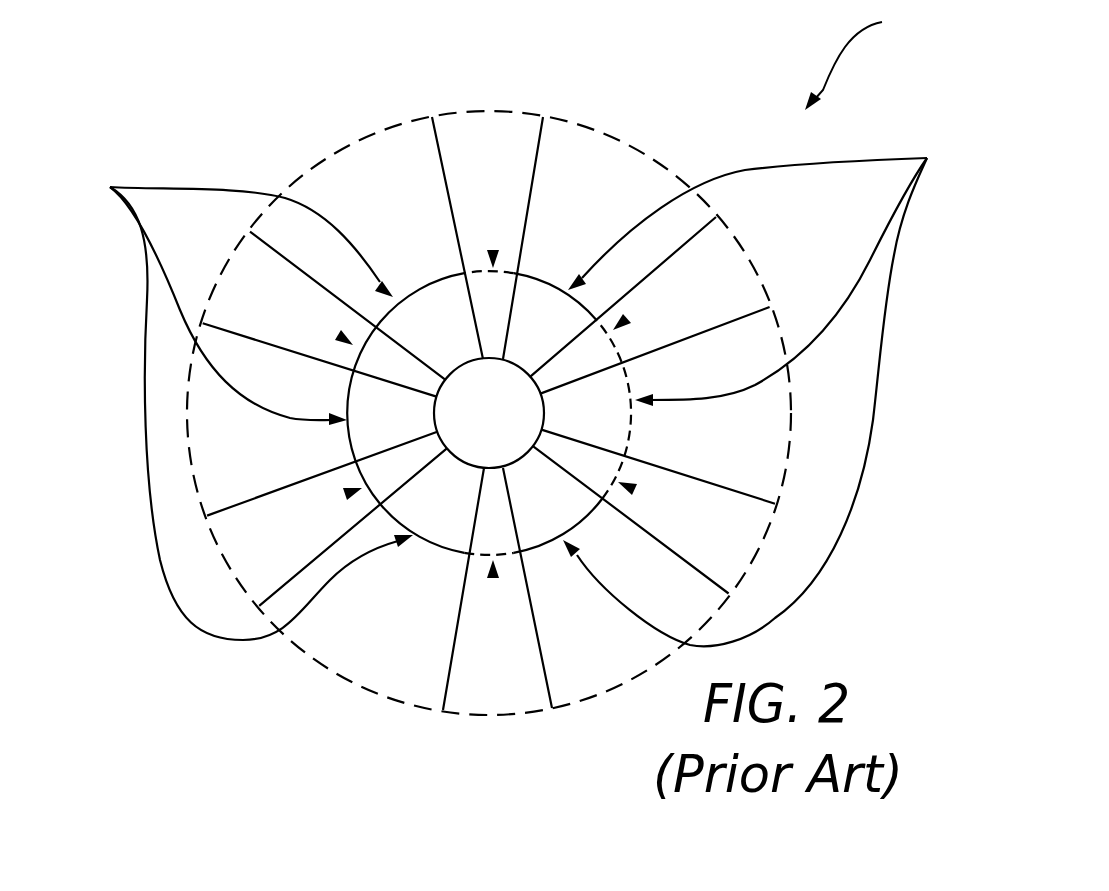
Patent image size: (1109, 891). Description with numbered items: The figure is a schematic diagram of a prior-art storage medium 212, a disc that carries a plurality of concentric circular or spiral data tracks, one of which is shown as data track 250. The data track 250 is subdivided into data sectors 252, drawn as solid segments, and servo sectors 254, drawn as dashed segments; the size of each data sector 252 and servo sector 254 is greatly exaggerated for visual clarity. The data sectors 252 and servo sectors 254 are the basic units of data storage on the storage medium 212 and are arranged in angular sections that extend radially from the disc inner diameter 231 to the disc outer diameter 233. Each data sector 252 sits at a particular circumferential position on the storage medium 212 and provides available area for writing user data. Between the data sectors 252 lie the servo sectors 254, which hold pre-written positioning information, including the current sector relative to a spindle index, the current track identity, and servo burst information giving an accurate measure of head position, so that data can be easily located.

The storage medium 212 is at (872, 58).
The disc inner diameter 231 is at (519, 367).
The disc outer diameter 233 is at (612, 138).
The data track 250 is at (423, 283).
The data sectors 252 is at (525, 392).
The servo sectors 254 is at (493, 255).